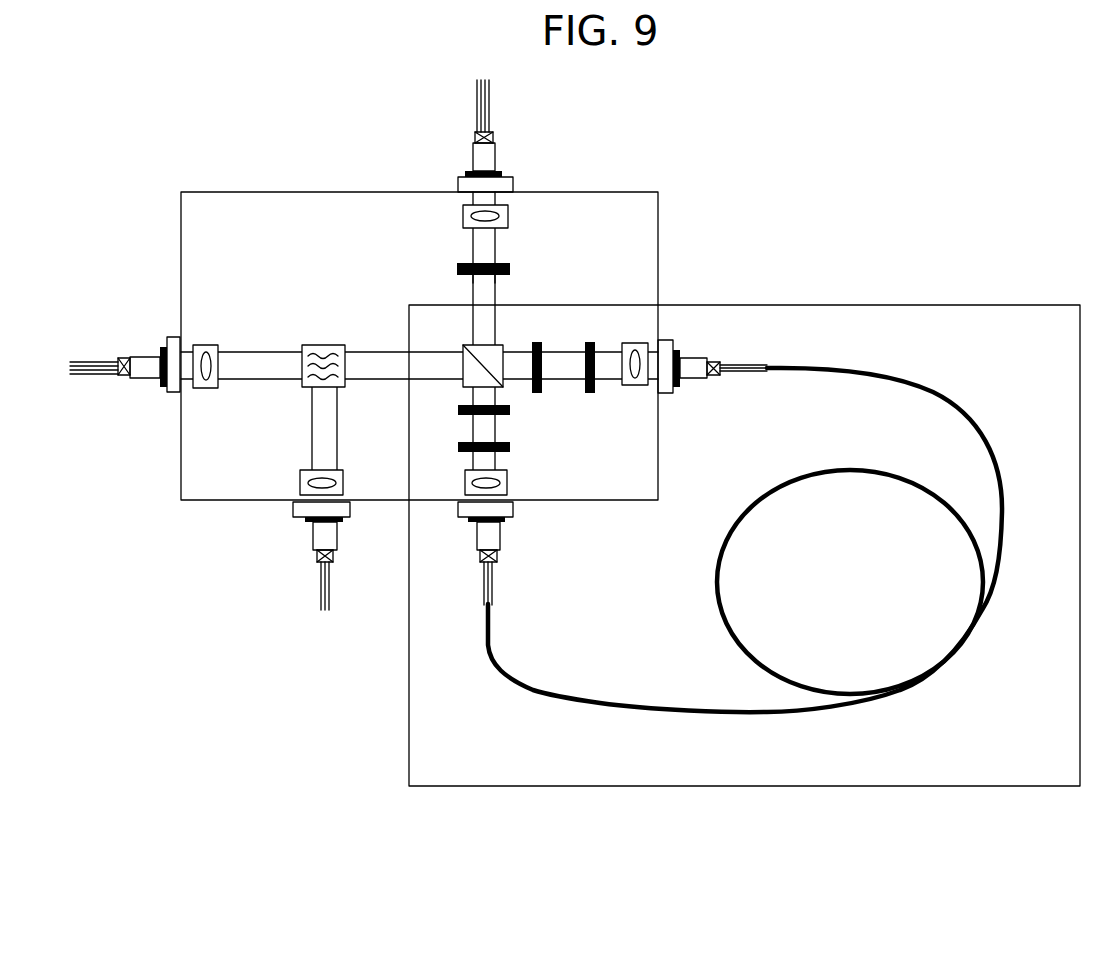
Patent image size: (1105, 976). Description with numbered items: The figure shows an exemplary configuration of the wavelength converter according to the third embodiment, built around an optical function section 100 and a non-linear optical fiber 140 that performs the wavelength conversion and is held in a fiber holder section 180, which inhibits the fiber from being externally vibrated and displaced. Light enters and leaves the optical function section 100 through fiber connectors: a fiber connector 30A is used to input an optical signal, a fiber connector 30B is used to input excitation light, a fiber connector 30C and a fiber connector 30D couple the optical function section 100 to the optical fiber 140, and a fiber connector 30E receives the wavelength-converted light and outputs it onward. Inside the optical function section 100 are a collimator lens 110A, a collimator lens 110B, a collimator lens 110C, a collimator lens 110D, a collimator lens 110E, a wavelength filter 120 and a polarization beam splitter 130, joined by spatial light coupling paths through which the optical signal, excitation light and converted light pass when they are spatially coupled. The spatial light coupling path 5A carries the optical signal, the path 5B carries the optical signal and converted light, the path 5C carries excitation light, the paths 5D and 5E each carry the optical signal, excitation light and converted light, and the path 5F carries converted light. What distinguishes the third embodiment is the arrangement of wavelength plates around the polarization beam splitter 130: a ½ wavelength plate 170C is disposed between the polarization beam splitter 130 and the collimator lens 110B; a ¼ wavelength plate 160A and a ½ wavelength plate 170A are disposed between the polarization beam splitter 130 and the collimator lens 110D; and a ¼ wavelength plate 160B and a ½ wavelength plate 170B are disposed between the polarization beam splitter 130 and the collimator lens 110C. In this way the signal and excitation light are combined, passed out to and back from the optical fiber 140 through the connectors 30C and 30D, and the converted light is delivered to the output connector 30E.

The optical function section 100 is at (258, 191).
The fiber holder section 180 is at (768, 787).
The non-linear optical fiber 140 is at (885, 370).
The spatial light coupling path 5A is at (250, 352).
The spatial light coupling path 5B is at (395, 352).
The spatial light coupling path 5C is at (497, 293).
The spatial light coupling path 5D is at (563, 382).
The spatial light coupling path 5E is at (463, 460).
The spatial light coupling path 5F is at (310, 429).
The collimator lens 110A is at (205, 345).
The collimator lens 110B is at (463, 213).
The collimator lens 110C is at (634, 343).
The collimator lens 110D is at (508, 481).
The collimator lens 110E is at (300, 483).
The wavelength filter 120 is at (305, 345).
The polarization beam splitter 130 is at (465, 345).
The ¼ wavelength plate 160A is at (458, 410).
The ¼ wavelength plate 160B is at (535, 342).
The ½ wavelength plate 170A is at (458, 447).
The ½ wavelength plate 170B is at (590, 342).
The ½ wavelength plate 170C is at (508, 268).
The fiber connector 30A is at (150, 342).
The fiber connector 30B is at (498, 157).
The fiber connector 30C is at (697, 357).
The fiber connector 30D is at (478, 552).
The fiber connector 30E is at (310, 540).